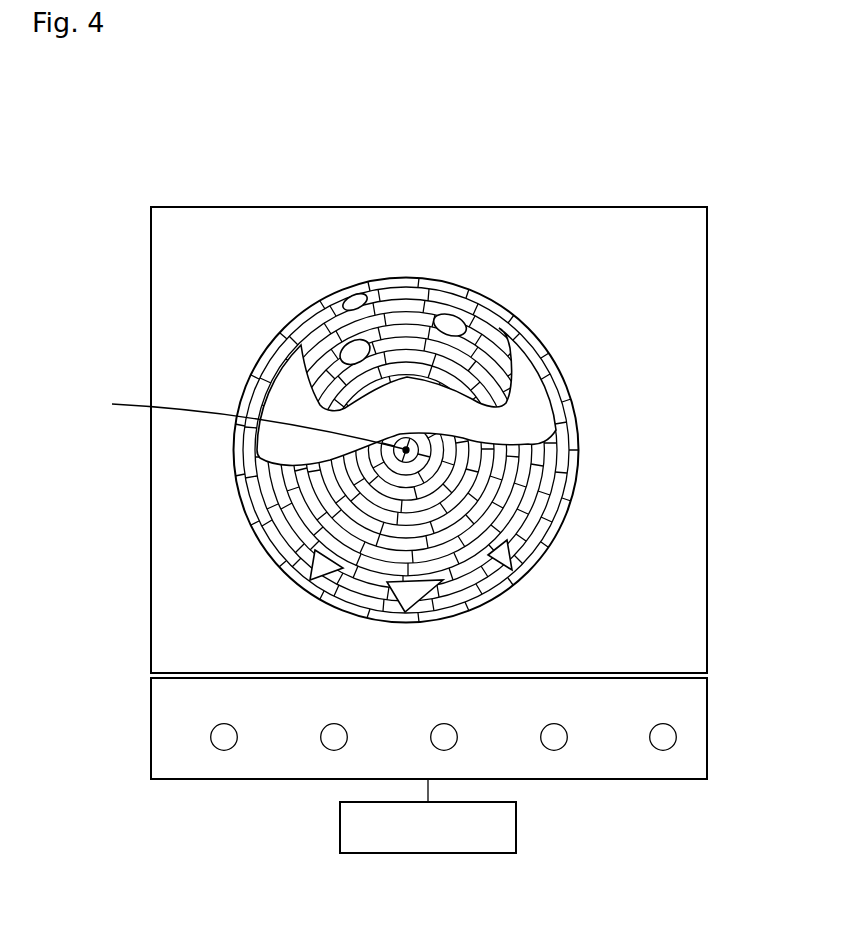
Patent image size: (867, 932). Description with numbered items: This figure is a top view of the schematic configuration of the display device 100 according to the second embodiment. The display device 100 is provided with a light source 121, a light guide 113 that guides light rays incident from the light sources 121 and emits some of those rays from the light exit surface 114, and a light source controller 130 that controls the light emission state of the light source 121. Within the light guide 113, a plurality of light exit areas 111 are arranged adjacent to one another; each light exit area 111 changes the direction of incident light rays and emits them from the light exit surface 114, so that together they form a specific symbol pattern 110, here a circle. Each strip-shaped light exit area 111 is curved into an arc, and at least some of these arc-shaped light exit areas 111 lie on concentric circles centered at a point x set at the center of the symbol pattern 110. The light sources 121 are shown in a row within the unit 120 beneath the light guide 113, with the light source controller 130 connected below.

The display device 100 is at (151, 196).
The symbol pattern 110 is at (440, 386).
The light exit area 111 is at (455, 283).
The light guide 113 is at (708, 267).
The light exit surface 114 is at (693, 515).
The light source unit 120 is at (468, 758).
The light source 121 is at (553, 750).
The light source controller 130 is at (440, 855).